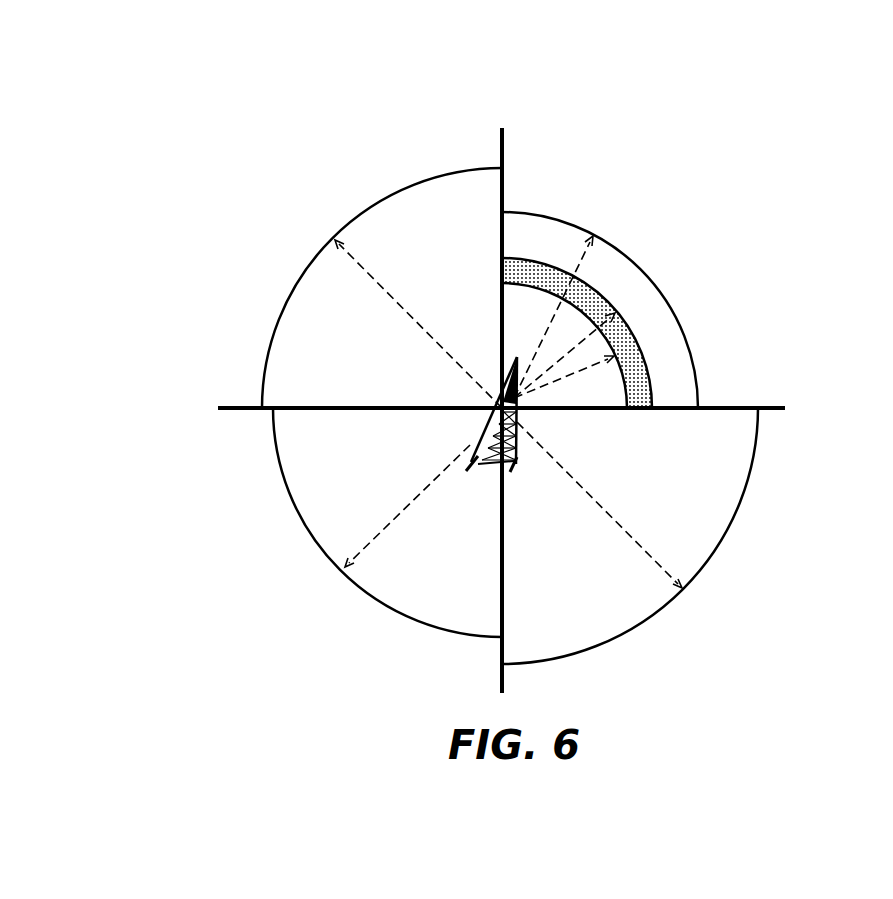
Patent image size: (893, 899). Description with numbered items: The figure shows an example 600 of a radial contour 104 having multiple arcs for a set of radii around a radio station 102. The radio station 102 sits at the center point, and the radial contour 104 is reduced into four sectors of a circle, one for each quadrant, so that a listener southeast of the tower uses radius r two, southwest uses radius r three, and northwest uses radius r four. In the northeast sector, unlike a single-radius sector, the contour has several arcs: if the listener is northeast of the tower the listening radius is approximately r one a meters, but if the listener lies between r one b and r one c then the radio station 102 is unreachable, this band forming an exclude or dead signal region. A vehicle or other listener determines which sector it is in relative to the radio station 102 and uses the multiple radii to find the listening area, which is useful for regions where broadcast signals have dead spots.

The example 600 is at (158, 63).
The radio station 102 is at (510, 420).
The radial contour 104 is at (639, 204).